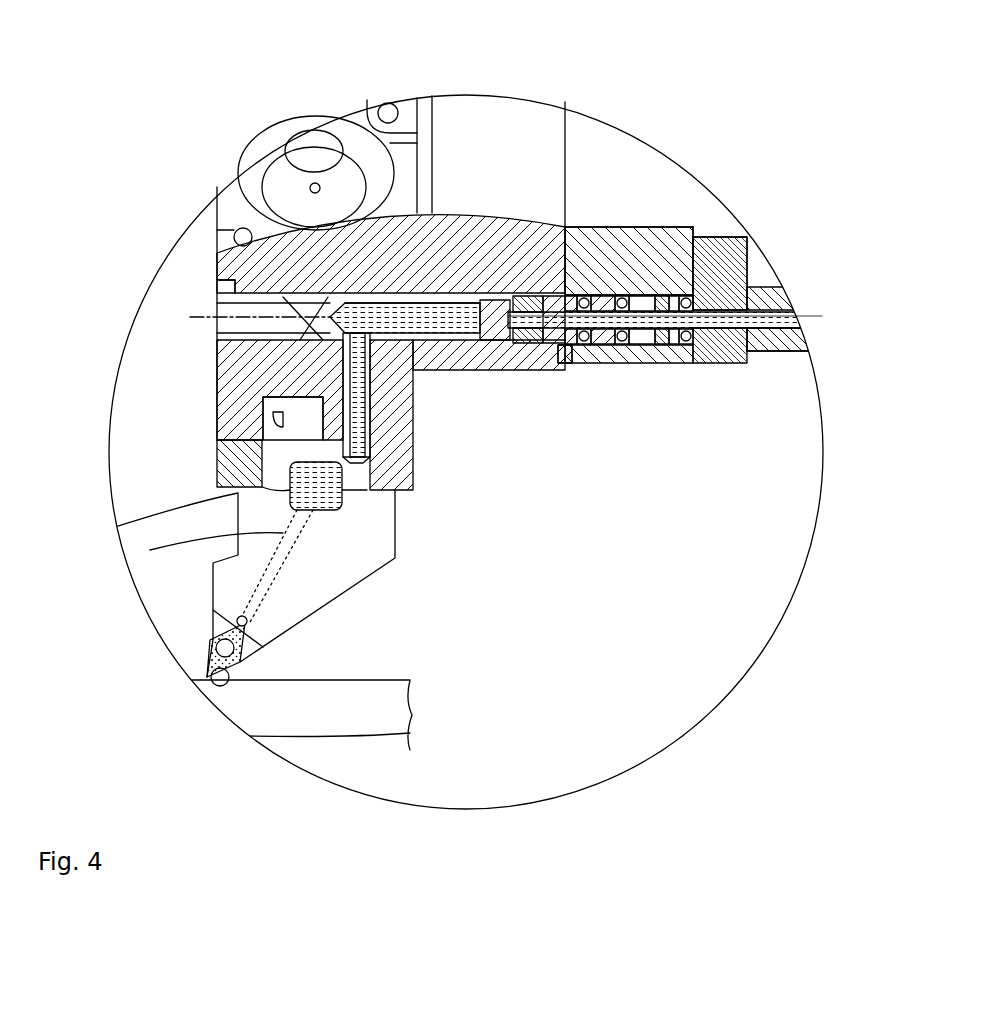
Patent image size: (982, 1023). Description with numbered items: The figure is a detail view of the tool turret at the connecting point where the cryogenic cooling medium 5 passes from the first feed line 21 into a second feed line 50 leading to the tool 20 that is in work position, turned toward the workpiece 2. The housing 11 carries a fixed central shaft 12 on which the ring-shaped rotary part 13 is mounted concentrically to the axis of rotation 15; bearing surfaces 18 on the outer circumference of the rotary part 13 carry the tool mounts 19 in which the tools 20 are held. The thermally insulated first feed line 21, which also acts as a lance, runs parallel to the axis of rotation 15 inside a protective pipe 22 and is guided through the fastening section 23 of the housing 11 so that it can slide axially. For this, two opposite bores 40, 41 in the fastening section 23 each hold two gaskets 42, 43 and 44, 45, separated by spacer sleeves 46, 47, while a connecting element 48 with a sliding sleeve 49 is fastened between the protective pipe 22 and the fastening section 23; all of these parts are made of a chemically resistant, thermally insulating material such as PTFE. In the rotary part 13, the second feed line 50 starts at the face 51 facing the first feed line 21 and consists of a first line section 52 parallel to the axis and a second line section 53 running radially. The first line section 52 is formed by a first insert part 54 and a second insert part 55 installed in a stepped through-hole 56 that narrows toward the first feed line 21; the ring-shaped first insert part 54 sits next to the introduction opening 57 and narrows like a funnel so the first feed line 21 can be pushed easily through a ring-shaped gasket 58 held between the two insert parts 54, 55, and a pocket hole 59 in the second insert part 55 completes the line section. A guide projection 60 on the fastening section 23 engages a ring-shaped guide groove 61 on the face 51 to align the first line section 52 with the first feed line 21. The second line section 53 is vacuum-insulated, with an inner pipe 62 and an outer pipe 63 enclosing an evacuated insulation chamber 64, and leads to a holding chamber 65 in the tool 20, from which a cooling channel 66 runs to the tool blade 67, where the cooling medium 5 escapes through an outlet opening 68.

The workpiece 2 is at (238, 717).
The cryogenic cooling medium 5 is at (215, 248).
The housing 11 is at (713, 207).
The central shaft 12 is at (205, 213).
The rotary part 13 is at (210, 375).
The axis of rotation 15 is at (345, 305).
The bearing surfaces 18 is at (262, 472).
The tool mounts 19 is at (262, 480).
The tools 20 is at (235, 577).
The first feed line 21 is at (782, 330).
The protective pipe 22 is at (787, 298).
The fastening section 23 is at (625, 363).
The bore 40 is at (685, 363).
The bore 41 is at (593, 363).
The gasket 42 is at (735, 238).
The gasket 43 is at (665, 296).
The gasket 44 is at (623, 298).
The gasket 45 is at (593, 296).
The spacer sleeve 46 is at (675, 363).
The spacer sleeve 47 is at (602, 363).
The connecting element 48 is at (748, 258).
The sliding sleeve 49 is at (745, 352).
The second feed lines 50 is at (440, 370).
The face 51 is at (565, 143).
The first line section 52 is at (393, 292).
The second line section 53 is at (430, 355).
The first insert part 54 is at (530, 298).
The second insert part 55 is at (217, 310).
The through-hole 56 is at (233, 295).
The introduction opening 57 is at (548, 298).
The gasket 58 is at (508, 300).
The pocket hole 59 is at (250, 318).
The guide projection 60 is at (572, 363).
The guide groove 61 is at (556, 370).
The inner pipe 62 is at (305, 418).
The outer pipe 63 is at (280, 405).
The insulation chamber 64 is at (265, 343).
The holding chamber 65 is at (290, 500).
The cooling channel 66 is at (240, 548).
The tool blade 67 is at (213, 672).
The outlet opening 68 is at (207, 637).